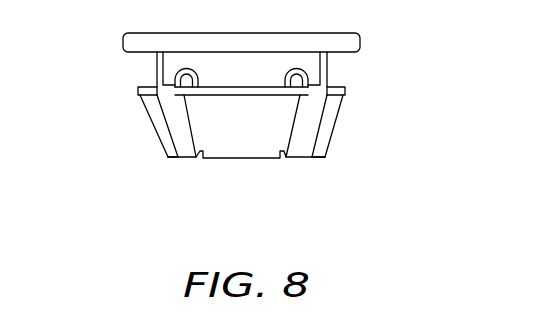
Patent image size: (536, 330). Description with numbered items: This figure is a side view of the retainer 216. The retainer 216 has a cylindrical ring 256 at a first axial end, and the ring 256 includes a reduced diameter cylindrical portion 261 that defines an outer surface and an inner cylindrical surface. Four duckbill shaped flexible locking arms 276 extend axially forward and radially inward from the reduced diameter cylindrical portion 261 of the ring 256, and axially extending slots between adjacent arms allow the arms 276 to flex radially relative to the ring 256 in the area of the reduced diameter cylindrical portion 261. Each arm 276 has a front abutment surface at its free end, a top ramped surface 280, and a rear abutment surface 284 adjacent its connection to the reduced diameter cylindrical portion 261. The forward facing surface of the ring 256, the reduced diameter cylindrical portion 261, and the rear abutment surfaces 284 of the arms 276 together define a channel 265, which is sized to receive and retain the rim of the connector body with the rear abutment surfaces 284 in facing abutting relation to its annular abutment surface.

The cylindrical ring 256 is at (120, 50).
The reduced diameter cylindrical portion 261 is at (172, 63).
The channel 265 is at (331, 66).
The rear abutment surface 284 is at (348, 86).
The flexible locking arm 276 is at (152, 126).
The retainer 216 is at (156, 158).
The top ramped surface 280 is at (318, 145).